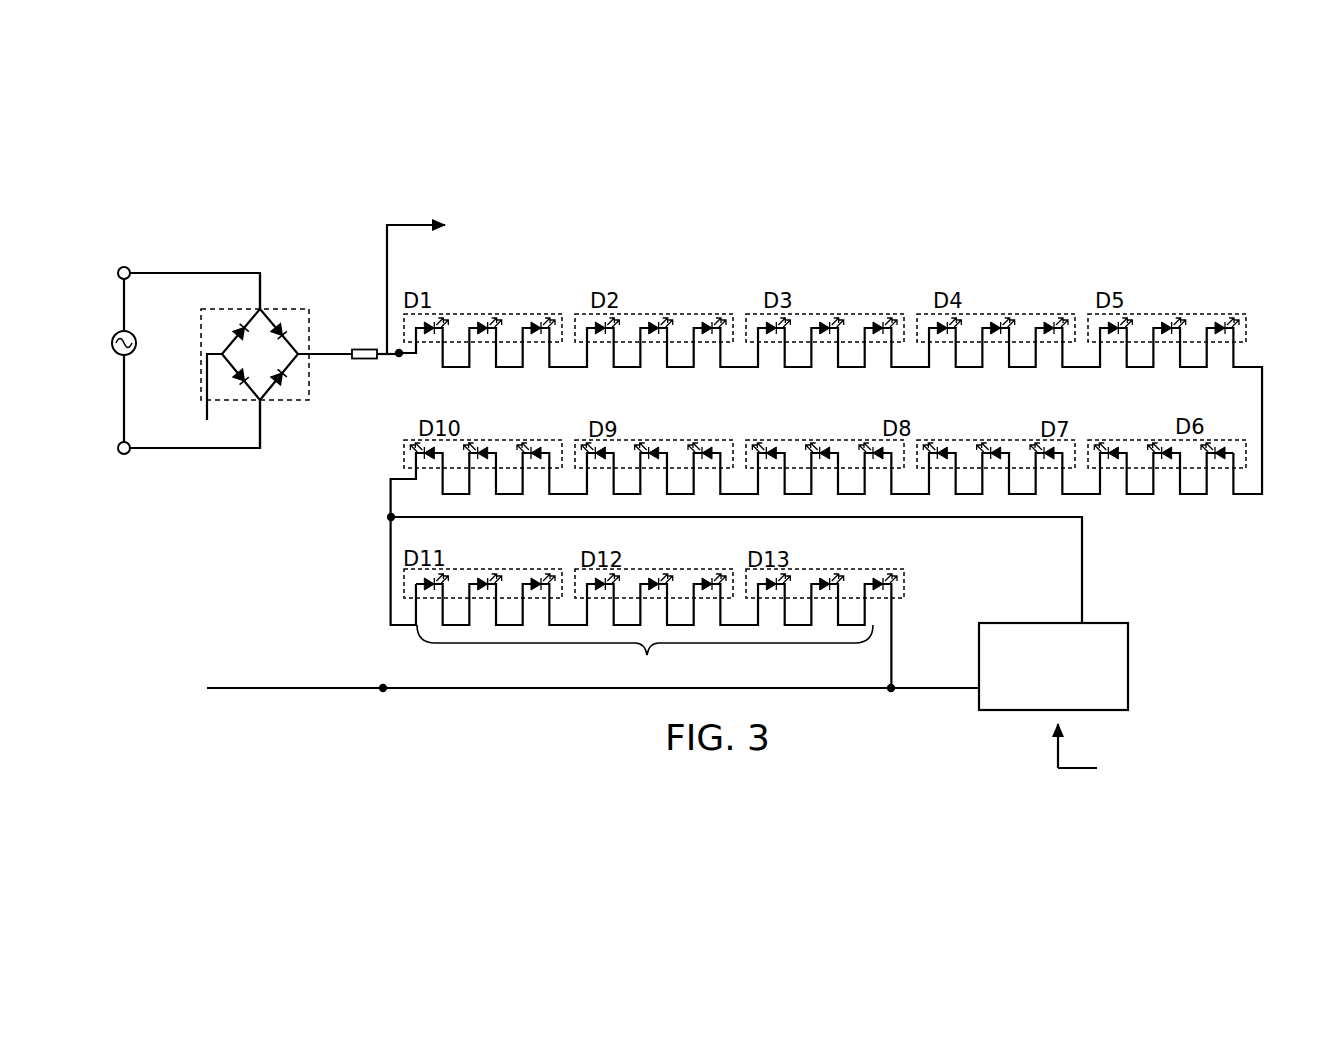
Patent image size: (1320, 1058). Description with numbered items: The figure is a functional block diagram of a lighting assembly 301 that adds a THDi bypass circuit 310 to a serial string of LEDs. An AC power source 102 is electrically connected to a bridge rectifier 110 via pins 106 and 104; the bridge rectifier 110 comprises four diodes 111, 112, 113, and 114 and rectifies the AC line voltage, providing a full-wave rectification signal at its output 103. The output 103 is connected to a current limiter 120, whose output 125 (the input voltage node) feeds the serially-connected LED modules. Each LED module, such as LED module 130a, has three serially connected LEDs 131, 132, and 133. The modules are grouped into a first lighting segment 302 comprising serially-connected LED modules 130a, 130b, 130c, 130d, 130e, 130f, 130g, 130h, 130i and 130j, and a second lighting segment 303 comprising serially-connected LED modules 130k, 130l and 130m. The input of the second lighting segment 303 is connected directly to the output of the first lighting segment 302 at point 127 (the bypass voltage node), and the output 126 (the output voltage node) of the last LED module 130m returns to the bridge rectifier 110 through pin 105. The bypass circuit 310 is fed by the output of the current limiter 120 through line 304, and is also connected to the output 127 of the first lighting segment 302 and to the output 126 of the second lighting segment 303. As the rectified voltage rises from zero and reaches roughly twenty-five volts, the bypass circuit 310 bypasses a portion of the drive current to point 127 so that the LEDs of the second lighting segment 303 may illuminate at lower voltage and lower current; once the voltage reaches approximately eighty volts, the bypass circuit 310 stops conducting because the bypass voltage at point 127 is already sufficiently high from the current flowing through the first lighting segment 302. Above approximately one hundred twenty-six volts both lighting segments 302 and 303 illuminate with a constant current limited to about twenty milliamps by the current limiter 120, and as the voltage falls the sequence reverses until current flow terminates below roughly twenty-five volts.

The AC power source 102 is at (110, 340).
The output 103 is at (305, 355).
The pin 104 is at (262, 400).
The pin 105 is at (220, 354).
The pin 106 is at (260, 308).
The bridge rectifier 110 is at (300, 308).
The diode 111 is at (282, 333).
The diode 112 is at (282, 377).
The diode 113 is at (238, 377).
The diode 114 is at (238, 333).
The current limiter 120 is at (377, 350).
The output of current limiter 125 is at (399, 358).
The output of second lighting segment 126 is at (383, 690).
The point 127 is at (390, 518).
The LED module 130a is at (509, 286).
The LED module 130b is at (725, 313).
The LED module 130c is at (852, 313).
The LED module 130d is at (1022, 313).
The LED module 130e is at (1200, 313).
The LED module 130f is at (1248, 456).
The LED module 130g is at (955, 440).
The LED module 130h is at (783, 440).
The LED module 130i is at (642, 440).
The LED module 130j is at (478, 440).
The LED module 130k is at (462, 569).
The LED module 130l is at (632, 569).
The LED module 130m is at (850, 569).
The LED 131 is at (429, 324).
The LED 132 is at (482, 324).
The LED 133 is at (535, 324).
The lighting assembly 301 is at (990, 214).
The first lighting segment 302 is at (1209, 541).
The second lighting segment 303 is at (653, 636).
The line 304 is at (422, 225).
The bypass circuit 310 is at (1128, 665).